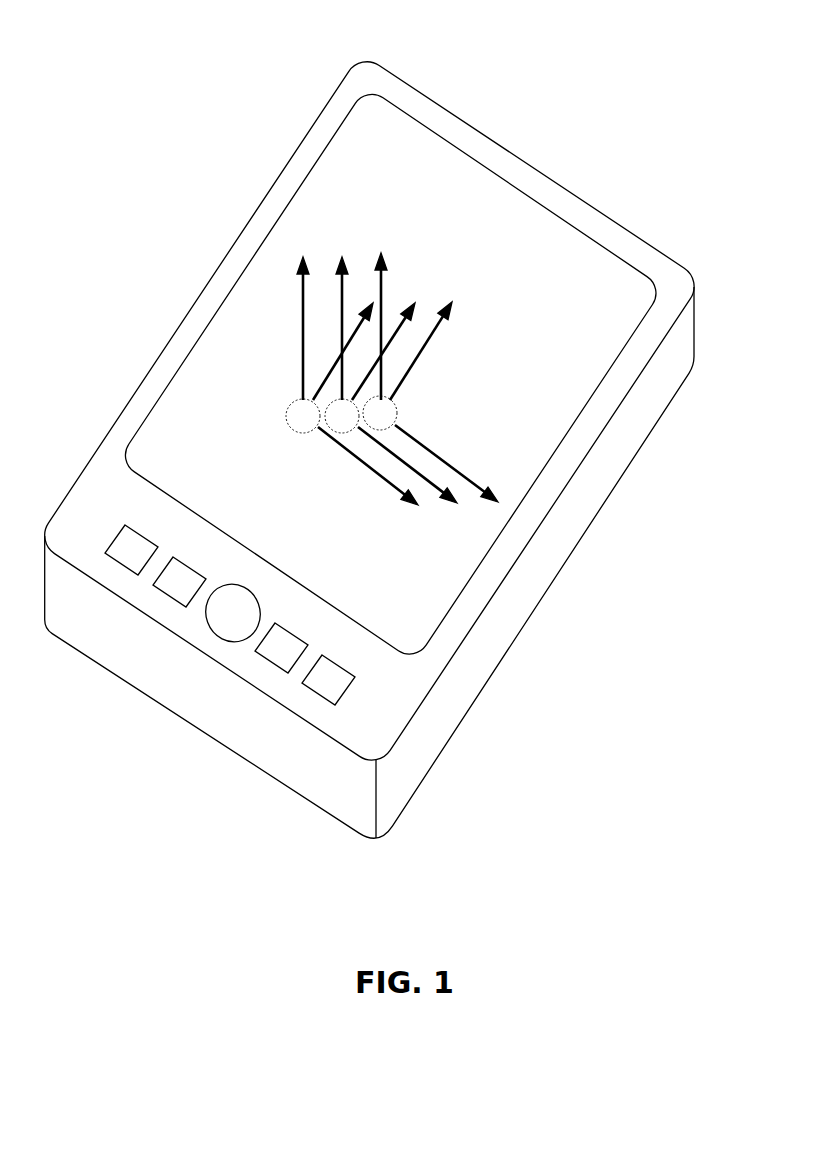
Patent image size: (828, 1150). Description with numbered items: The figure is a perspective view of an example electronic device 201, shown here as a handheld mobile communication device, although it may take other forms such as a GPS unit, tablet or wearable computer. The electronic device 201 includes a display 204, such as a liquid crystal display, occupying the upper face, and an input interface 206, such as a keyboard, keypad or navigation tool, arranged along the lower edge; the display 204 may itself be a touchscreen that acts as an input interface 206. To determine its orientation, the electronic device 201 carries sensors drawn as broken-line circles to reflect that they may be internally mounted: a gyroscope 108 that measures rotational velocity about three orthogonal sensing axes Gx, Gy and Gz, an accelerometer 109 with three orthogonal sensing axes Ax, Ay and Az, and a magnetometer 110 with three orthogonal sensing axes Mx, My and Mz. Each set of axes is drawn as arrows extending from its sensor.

The electronic device 201 is at (433, 120).
The display 204 is at (263, 247).
The input interface 206 is at (122, 564).
The gyroscope 108 is at (293, 430).
The accelerometer 109 is at (332, 433).
The magnetometer 110 is at (400, 398).